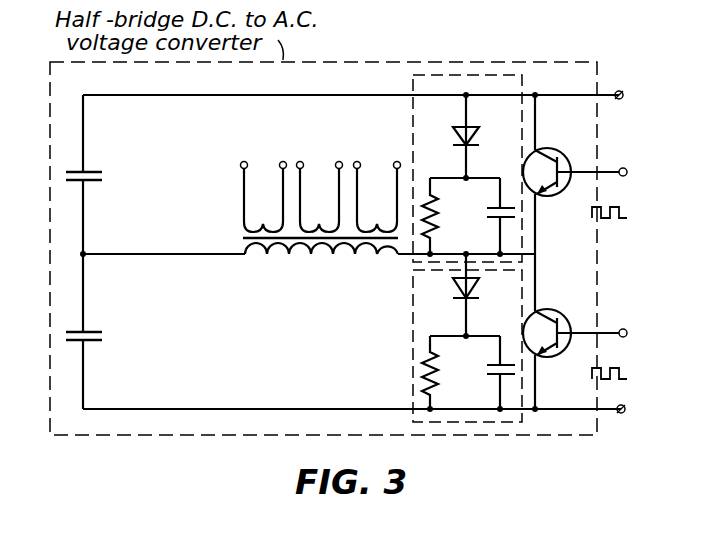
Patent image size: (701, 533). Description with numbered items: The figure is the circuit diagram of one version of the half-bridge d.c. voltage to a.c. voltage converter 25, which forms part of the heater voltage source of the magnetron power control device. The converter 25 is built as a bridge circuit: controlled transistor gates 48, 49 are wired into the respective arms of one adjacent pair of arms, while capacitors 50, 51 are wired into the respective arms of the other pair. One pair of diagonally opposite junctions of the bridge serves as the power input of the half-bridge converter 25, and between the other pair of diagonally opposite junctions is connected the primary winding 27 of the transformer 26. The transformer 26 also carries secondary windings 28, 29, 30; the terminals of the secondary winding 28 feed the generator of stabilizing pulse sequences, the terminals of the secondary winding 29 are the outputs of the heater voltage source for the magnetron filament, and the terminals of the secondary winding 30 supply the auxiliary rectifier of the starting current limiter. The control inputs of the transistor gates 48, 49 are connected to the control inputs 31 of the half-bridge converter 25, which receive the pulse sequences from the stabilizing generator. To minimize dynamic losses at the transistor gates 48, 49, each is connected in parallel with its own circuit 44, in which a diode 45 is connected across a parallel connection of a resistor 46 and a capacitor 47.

The half-bridge d.c. voltage to a.c. voltage converter 25 is at (517, 437).
The transformer 26 is at (243, 239).
The primary winding 27 is at (327, 255).
The secondary winding 28 is at (269, 224).
The secondary winding 29 is at (327, 224).
The secondary winding 30 is at (385, 224).
The control inputs 31 is at (640, 257).
The circuit 44 is at (444, 75).
The diode 45 is at (483, 215).
The resistor 46 is at (438, 222).
The capacitor 47 is at (493, 293).
The transistor gate 48 is at (571, 159).
The transistor gate 49 is at (561, 313).
The capacitor 50 is at (93, 162).
The capacitor 51 is at (93, 322).